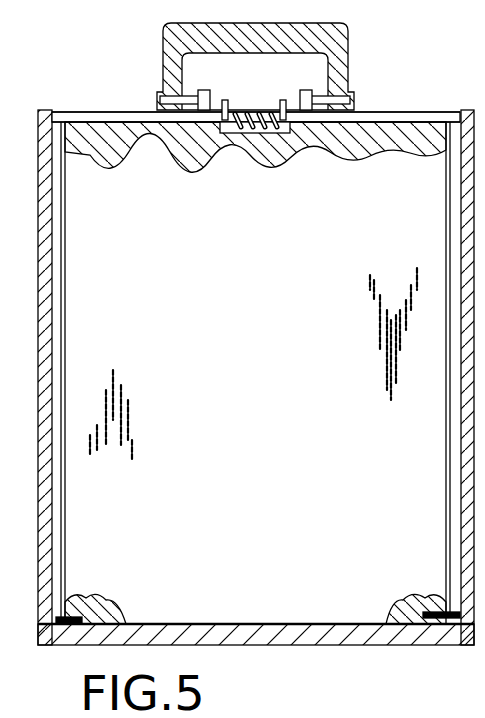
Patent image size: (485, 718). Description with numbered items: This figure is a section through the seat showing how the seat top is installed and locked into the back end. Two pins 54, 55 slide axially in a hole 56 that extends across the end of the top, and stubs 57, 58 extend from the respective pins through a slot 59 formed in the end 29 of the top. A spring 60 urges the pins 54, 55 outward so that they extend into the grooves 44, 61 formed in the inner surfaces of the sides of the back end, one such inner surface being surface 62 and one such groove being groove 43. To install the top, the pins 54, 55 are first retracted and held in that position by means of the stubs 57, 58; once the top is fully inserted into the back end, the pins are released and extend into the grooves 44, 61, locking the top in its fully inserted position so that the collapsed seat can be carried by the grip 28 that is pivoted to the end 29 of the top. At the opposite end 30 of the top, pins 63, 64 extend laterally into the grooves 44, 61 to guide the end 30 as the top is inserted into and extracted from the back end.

The grip 28 is at (350, 31).
The end of top 29 is at (113, 112).
The end of top 30 is at (205, 622).
The groove 43 is at (460, 183).
The groove 44 is at (450, 233).
The pin 54 is at (426, 113).
The pin 55 is at (68, 112).
The hole 56 is at (378, 112).
The stub 57 is at (217, 99).
The stub 58 is at (286, 100).
The slot 59 is at (232, 112).
The spring 60 is at (258, 113).
The groove 61 is at (62, 218).
The inner surface 62 is at (65, 243).
The pin 63 is at (56, 629).
The pin 64 is at (460, 623).